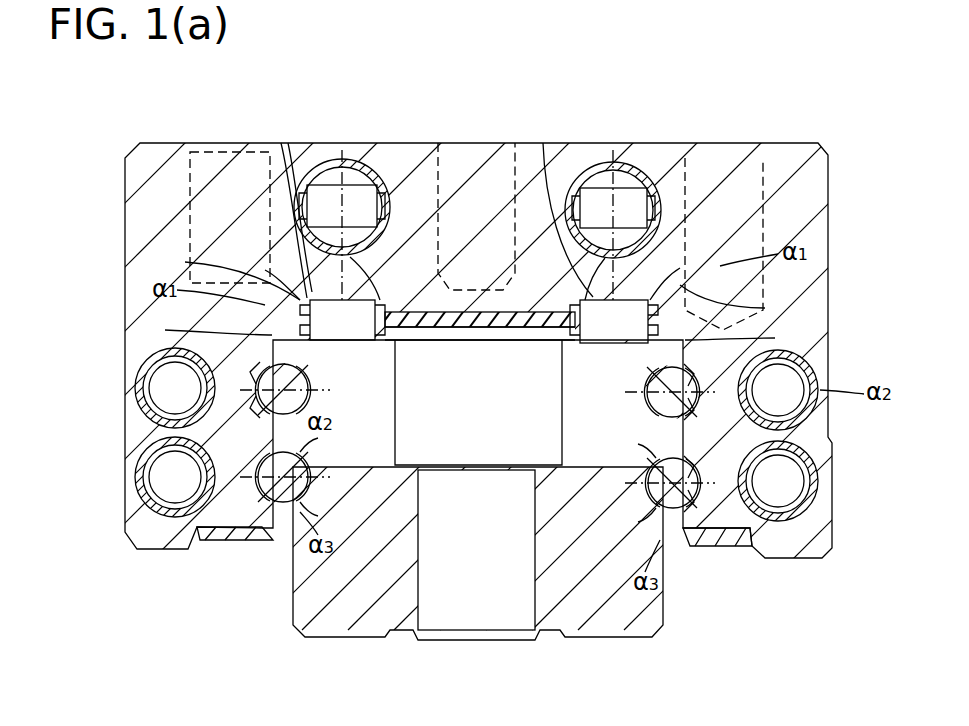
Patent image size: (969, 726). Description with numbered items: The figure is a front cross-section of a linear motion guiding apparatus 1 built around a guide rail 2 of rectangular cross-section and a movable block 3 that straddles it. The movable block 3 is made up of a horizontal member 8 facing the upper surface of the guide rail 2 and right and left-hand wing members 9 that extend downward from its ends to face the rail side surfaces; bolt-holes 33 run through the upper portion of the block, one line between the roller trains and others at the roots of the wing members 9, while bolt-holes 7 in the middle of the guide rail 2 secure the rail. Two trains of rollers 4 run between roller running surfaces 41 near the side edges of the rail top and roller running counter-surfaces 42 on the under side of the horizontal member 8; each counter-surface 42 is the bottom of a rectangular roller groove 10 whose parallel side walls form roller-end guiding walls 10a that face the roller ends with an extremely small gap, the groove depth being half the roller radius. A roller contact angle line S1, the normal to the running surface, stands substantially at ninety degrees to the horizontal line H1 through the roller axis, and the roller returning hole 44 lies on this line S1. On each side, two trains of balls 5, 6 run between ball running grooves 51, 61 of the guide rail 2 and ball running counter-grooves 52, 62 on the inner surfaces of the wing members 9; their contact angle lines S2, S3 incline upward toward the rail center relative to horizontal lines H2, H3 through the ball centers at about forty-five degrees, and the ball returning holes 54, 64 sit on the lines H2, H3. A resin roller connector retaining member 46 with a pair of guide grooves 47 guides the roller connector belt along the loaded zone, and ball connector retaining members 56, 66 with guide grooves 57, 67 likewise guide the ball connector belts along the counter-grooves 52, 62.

The linear motion guiding apparatus 1 is at (826, 88).
The guide rail 2 is at (623, 630).
The movable block 3 is at (604, 134).
The roller 4 is at (378, 300).
The ball 5 is at (350, 392).
The ball 6 is at (305, 488).
The bolt-hole 7 is at (420, 590).
The horizontal member 8 is at (402, 143).
The wing member 9 is at (205, 552).
The roller groove 10 is at (281, 143).
The roller-end guiding wall 10a is at (298, 143).
The bolt-hole 33 is at (205, 143).
The roller running surface 41 is at (368, 340).
The roller running counter-surface 42 is at (678, 143).
The roller returning hole 44 is at (328, 195).
The roller connector retaining member 46 is at (190, 262).
The guide groove 47 is at (300, 315).
The ball running groove 51 is at (308, 390).
The ball running counter-groove 52 is at (272, 385).
The ball returning hole 54 is at (135, 388).
The ball connector retaining member 56 is at (165, 330).
The guide groove 57 is at (297, 338).
The ball running groove 61 is at (308, 477).
The ball running counter-groove 62 is at (140, 472).
The ball returning hole 64 is at (140, 485).
The ball connector retaining member 66 is at (308, 458).
The guide groove 67 is at (645, 465).
The horizontal line H1 is at (475, 387).
The horizontal line H2 is at (480, 413).
The horizontal line H3 is at (493, 547).
The contact angle line S1 is at (506, 311).
The contact angle line S2 is at (471, 437).
The contact angle line S3 is at (255, 545).